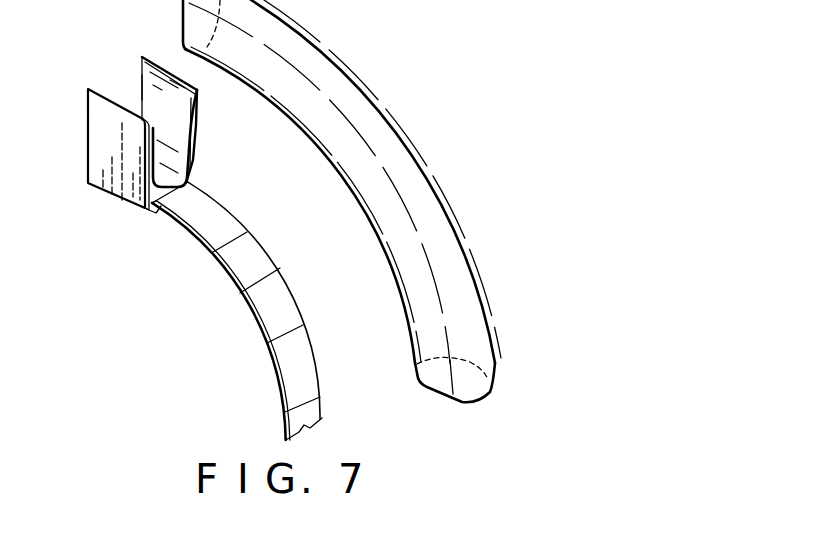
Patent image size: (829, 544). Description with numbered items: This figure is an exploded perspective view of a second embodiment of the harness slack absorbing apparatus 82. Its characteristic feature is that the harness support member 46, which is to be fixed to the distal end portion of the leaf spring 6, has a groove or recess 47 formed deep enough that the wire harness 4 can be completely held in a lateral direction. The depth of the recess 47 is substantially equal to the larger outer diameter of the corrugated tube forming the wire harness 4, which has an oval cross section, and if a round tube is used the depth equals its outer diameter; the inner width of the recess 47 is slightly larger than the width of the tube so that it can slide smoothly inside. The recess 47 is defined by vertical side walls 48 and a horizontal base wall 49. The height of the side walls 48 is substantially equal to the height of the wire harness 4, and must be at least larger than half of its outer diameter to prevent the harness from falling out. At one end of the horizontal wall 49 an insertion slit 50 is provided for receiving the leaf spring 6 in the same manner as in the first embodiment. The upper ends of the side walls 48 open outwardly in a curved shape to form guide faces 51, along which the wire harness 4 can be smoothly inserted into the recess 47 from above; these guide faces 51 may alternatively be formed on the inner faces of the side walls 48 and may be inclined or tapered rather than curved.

The wire harness 4 is at (402, 122).
The leaf spring 6 is at (237, 311).
The harness support member 46 is at (111, 199).
The recess 47 is at (166, 165).
The side walls 48 is at (173, 135).
The horizontal base wall 49 is at (152, 210).
The insertion slit 50 is at (170, 215).
The guide faces 51 is at (116, 103).
The harness slack absorbing apparatus 82 is at (202, 309).